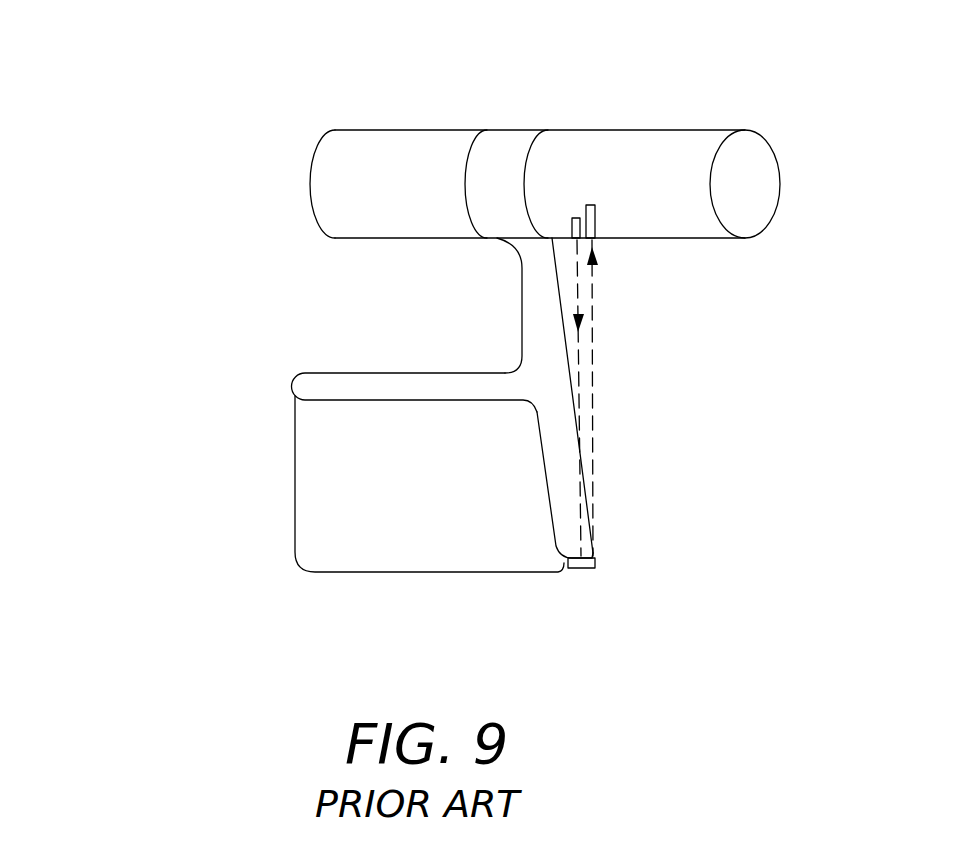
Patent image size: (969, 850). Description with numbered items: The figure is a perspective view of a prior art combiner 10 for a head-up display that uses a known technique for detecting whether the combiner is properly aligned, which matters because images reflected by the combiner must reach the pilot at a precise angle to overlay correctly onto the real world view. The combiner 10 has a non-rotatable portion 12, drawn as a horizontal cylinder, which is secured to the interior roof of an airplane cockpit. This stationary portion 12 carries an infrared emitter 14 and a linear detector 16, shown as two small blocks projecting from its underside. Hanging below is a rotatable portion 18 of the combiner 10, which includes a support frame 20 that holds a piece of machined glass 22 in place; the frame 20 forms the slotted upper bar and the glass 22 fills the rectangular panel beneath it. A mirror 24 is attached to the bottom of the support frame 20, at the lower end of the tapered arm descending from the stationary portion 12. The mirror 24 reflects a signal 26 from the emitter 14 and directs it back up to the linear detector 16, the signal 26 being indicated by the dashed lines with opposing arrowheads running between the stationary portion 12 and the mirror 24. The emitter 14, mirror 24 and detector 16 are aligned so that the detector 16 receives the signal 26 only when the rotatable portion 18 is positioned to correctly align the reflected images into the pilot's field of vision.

The combiner 10 is at (114, 302).
The non-rotatable portion 12 is at (350, 168).
The infrared emitter 14 is at (573, 218).
The linear detector 16 is at (598, 214).
The rotatable portion 18 is at (510, 213).
The support frame 20 is at (338, 387).
The machined glass 22 is at (320, 543).
The mirror 24 is at (570, 570).
The signal 26 is at (593, 343).